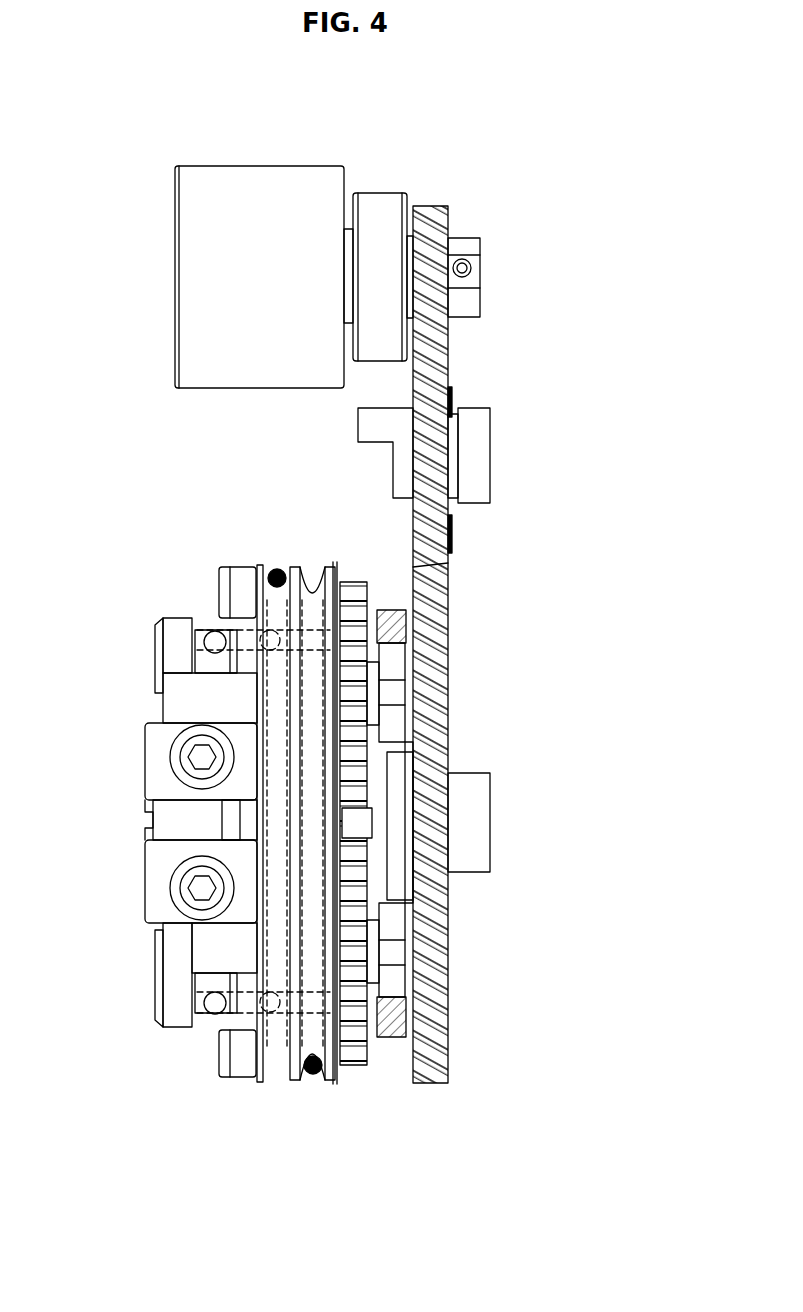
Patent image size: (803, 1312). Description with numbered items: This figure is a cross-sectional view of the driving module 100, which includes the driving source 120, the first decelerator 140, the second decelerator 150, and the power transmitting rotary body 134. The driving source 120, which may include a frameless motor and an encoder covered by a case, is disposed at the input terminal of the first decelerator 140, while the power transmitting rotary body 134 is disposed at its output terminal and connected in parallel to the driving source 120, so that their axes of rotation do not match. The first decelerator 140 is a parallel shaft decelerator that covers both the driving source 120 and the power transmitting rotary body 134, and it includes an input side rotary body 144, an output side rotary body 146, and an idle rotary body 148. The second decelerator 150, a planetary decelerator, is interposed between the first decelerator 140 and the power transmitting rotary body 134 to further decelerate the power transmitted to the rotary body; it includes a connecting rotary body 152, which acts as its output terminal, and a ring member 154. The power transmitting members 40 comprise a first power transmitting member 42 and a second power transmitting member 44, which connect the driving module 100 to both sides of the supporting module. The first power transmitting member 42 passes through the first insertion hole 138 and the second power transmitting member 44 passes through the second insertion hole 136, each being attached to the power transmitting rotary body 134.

The driving module 100 is at (328, 108).
The driving source 120 is at (187, 257).
The first decelerator 140 is at (612, 303).
The input side rotary body 144 is at (440, 267).
The output side rotary body 146 is at (443, 608).
The idle rotary body 148 is at (442, 452).
The second insertion hole 136 is at (334, 570).
The power transmitting rotary body 134 is at (300, 572).
The first insertion hole 138 is at (266, 1012).
The power transmitting member 40 is at (75, 678).
The first power transmitting member 42 is at (277, 580).
The second power transmitting member 44 is at (313, 1065).
The second decelerator 150 is at (435, 1180).
The connecting rotary body 152 is at (355, 1057).
The ring member 154 is at (390, 1035).